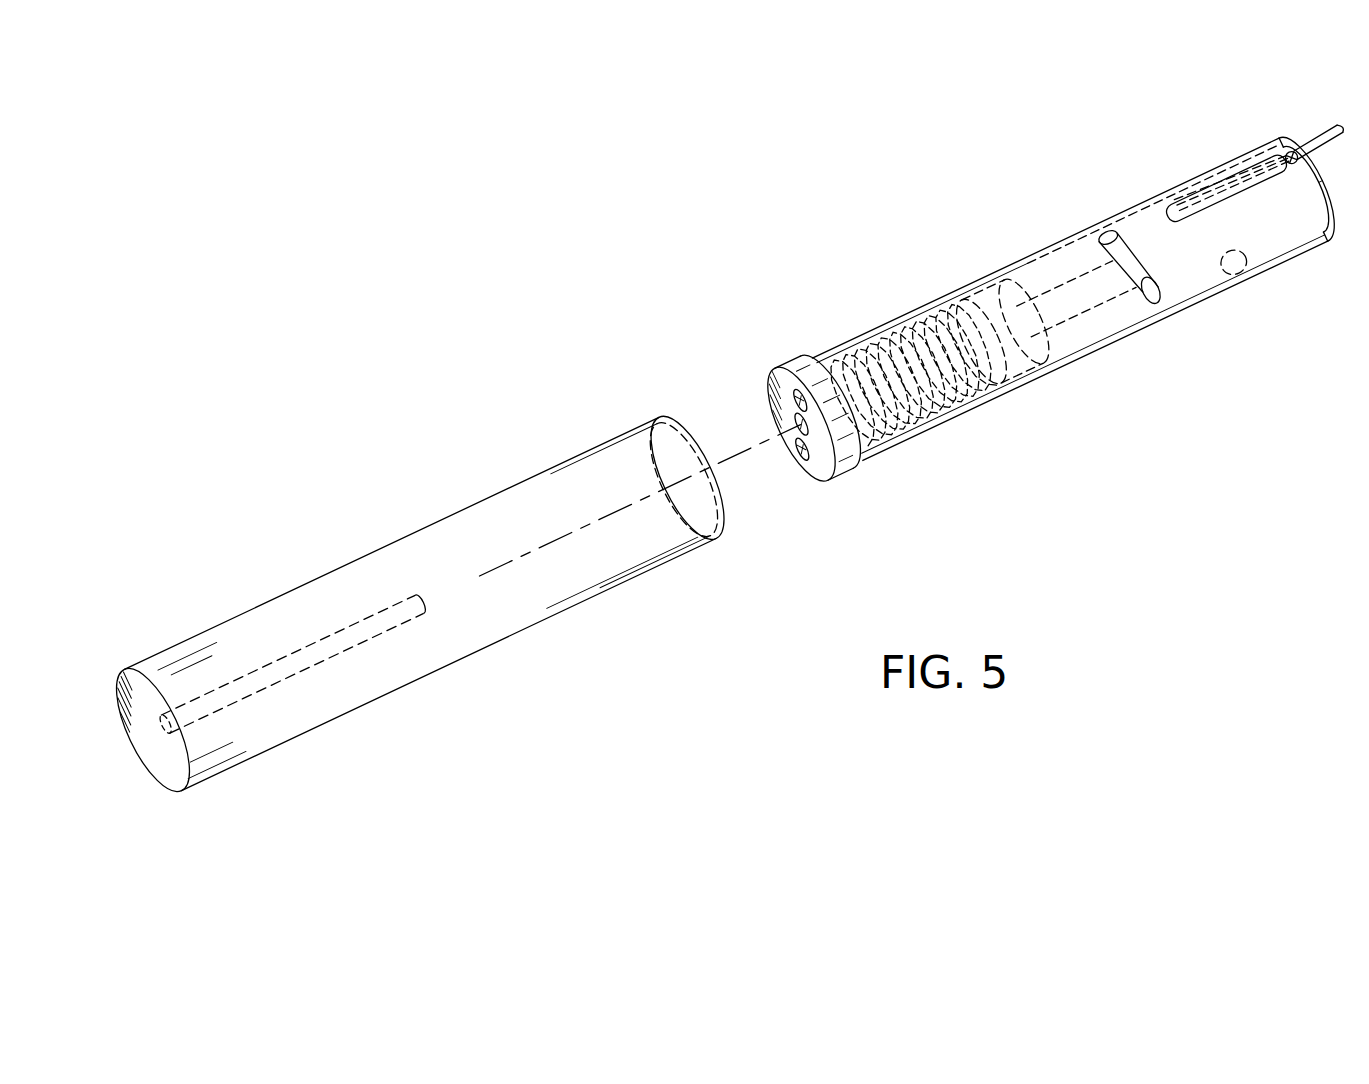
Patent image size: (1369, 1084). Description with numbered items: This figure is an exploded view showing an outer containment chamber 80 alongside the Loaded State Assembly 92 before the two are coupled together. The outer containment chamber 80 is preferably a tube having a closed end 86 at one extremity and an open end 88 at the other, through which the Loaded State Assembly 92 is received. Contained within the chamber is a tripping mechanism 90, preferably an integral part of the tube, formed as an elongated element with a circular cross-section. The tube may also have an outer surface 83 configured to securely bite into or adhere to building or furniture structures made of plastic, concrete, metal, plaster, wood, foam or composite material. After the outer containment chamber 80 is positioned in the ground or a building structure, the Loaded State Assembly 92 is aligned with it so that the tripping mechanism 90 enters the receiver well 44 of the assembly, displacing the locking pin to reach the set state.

The receiver well 44 is at (800, 423).
The outer containment chamber 80 is at (350, 717).
The outer surface 83 is at (473, 500).
The closed end 86 is at (152, 754).
The open end 88 is at (692, 437).
The tripping mechanism 90 is at (347, 625).
The Loaded State Assembly 92 is at (1283, 301).